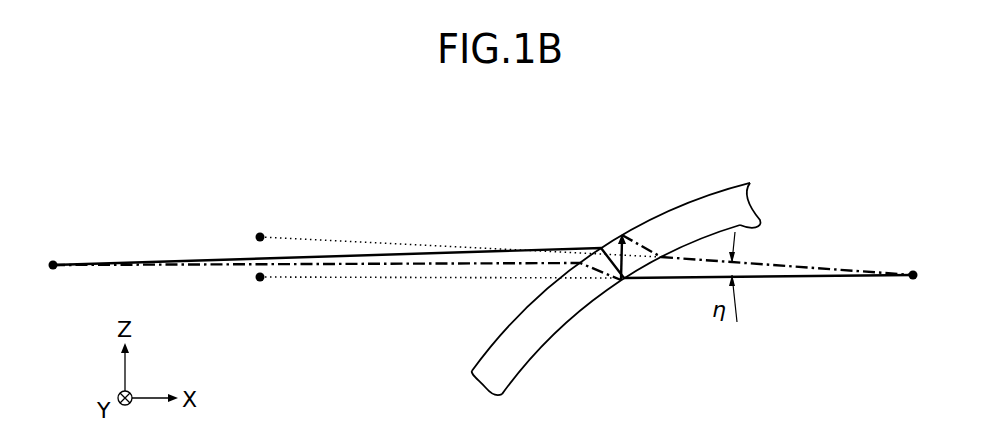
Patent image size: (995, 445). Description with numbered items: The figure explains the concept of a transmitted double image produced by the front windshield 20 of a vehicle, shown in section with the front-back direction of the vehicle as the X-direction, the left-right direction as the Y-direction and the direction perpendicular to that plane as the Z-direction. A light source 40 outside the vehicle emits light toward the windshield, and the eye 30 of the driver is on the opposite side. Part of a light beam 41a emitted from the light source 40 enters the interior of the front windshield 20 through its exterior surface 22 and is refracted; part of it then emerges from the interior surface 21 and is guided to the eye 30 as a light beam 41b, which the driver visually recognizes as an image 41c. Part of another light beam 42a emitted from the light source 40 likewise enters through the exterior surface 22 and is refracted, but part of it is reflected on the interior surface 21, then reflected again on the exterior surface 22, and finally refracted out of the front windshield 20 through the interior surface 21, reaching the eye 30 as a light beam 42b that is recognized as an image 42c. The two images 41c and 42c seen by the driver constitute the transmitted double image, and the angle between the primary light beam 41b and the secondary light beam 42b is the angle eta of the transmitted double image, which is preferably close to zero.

The front windshield 20 is at (646, 268).
The interior surface 21 is at (762, 222).
The exterior surface 22 is at (683, 201).
The eye 30 is at (917, 270).
The light source 40 is at (55, 262).
The light beam 41a is at (233, 257).
The light beam 41b is at (763, 277).
The image 41c is at (261, 282).
The light beam 42a is at (213, 266).
The light beam 42b is at (776, 262).
The image 42c is at (262, 233).